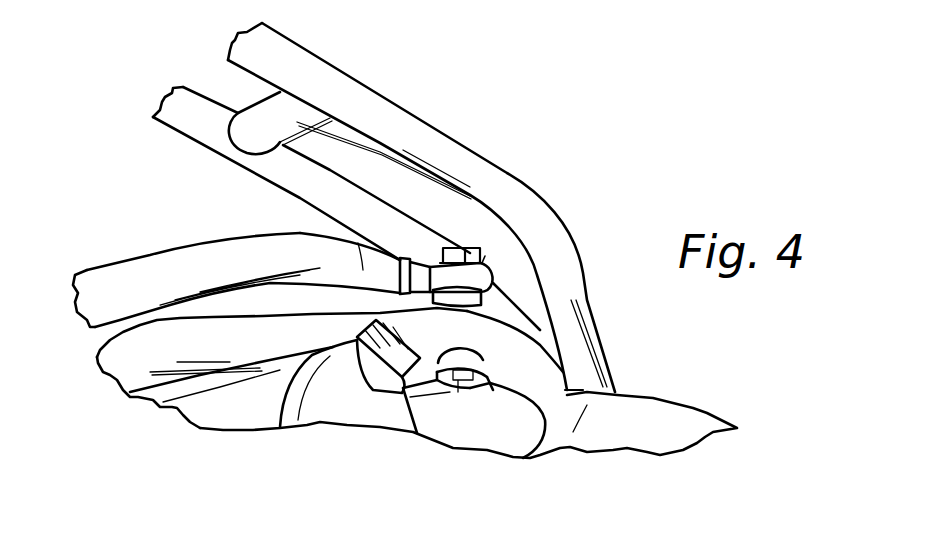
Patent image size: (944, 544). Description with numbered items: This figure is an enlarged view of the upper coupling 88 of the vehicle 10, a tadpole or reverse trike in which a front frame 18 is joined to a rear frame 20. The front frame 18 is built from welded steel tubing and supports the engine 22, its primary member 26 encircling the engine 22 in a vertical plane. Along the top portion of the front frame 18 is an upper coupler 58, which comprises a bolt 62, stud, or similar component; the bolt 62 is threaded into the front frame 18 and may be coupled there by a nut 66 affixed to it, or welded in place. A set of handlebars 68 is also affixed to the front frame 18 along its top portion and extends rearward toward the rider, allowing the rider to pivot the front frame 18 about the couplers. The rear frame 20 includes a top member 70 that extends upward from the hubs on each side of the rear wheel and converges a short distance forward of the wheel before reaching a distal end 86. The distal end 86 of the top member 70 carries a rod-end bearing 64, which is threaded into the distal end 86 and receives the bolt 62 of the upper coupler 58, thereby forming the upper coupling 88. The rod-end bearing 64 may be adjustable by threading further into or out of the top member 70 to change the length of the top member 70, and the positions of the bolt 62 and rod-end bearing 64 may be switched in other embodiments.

The vehicle 10 is at (665, 170).
The front frame 18 is at (552, 363).
The rear frame 20 is at (90, 273).
The engine 22 is at (692, 423).
The primary member 26 is at (587, 388).
The upper coupler 58 is at (480, 257).
The bolt 62 is at (462, 248).
The rod-end bearing 64 is at (443, 270).
The nut 66 is at (420, 432).
The handlebars 68 is at (358, 83).
The top member 70 is at (157, 252).
The distal end 86 is at (297, 233).
The upper coupling 88 is at (505, 282).